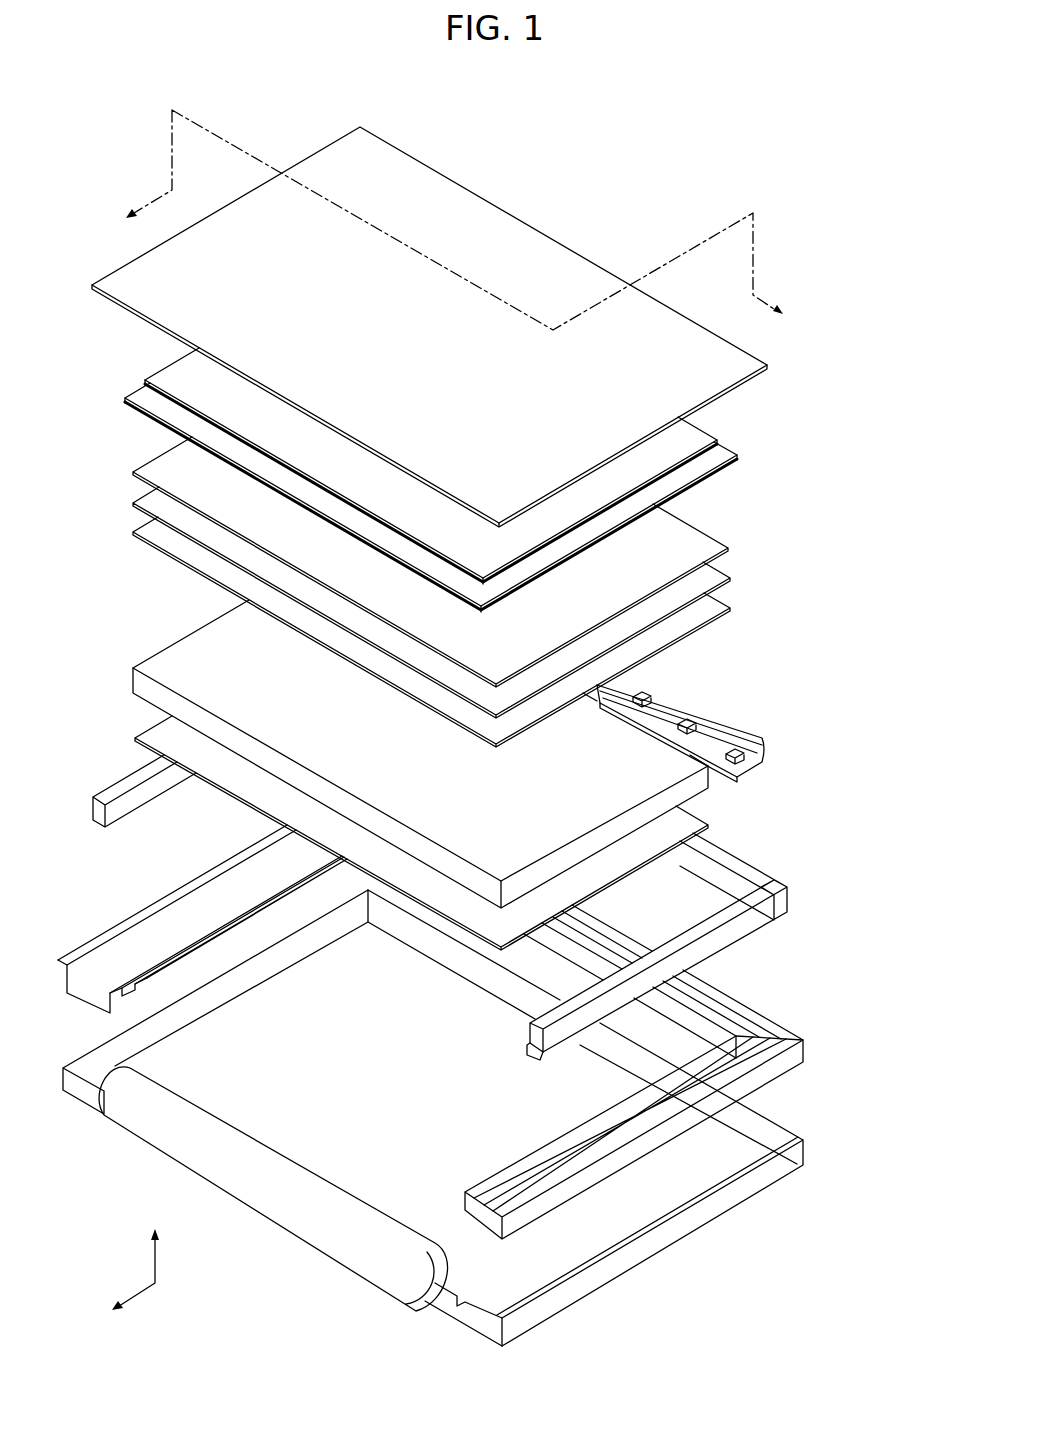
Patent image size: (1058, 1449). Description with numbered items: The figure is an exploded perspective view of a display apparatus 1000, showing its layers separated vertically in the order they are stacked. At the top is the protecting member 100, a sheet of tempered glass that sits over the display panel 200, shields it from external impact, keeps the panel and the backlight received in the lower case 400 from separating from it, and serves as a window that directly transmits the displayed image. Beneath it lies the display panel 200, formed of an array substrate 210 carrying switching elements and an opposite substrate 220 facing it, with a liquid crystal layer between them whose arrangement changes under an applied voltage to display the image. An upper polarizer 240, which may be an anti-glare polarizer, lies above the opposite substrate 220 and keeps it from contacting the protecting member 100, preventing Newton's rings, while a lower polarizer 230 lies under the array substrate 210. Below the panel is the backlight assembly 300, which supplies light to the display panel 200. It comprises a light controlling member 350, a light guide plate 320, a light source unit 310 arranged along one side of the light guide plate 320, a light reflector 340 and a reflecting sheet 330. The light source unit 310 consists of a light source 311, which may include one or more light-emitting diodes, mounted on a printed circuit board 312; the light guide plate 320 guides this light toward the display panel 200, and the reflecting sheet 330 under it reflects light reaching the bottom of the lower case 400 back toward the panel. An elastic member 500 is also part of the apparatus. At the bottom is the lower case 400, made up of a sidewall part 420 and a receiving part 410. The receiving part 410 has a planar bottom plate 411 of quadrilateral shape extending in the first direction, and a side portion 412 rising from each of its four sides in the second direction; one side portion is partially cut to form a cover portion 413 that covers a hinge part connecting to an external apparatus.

The display apparatus 1000 is at (488, 126).
The protecting member 100 is at (767, 365).
The display panel 200 is at (819, 410).
The array substrate 210 is at (722, 452).
The opposite substrate 220 is at (717, 441).
The lower polarizer 230 is at (125, 398).
The upper polarizer 240 is at (148, 380).
The backlight assembly 300 is at (839, 548).
The light source unit 310 is at (792, 672).
The light source 311 is at (662, 722).
The printed circuit board 312 is at (715, 748).
The light guide plate 320 is at (597, 717).
The reflecting sheet 330 is at (693, 813).
The light reflector 340 is at (763, 753).
The light controlling member 350 is at (787, 550).
The lower case 400 is at (879, 985).
The receiving part 410 is at (836, 1208).
The bottom plate 411 is at (713, 1162).
The side portion 412 is at (717, 1200).
The cover portion 413 is at (333, 1245).
The sidewall part 420 is at (757, 1015).
The elastic member 500 is at (740, 867).